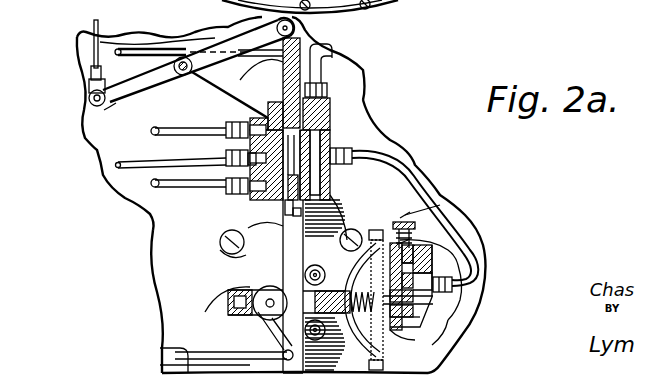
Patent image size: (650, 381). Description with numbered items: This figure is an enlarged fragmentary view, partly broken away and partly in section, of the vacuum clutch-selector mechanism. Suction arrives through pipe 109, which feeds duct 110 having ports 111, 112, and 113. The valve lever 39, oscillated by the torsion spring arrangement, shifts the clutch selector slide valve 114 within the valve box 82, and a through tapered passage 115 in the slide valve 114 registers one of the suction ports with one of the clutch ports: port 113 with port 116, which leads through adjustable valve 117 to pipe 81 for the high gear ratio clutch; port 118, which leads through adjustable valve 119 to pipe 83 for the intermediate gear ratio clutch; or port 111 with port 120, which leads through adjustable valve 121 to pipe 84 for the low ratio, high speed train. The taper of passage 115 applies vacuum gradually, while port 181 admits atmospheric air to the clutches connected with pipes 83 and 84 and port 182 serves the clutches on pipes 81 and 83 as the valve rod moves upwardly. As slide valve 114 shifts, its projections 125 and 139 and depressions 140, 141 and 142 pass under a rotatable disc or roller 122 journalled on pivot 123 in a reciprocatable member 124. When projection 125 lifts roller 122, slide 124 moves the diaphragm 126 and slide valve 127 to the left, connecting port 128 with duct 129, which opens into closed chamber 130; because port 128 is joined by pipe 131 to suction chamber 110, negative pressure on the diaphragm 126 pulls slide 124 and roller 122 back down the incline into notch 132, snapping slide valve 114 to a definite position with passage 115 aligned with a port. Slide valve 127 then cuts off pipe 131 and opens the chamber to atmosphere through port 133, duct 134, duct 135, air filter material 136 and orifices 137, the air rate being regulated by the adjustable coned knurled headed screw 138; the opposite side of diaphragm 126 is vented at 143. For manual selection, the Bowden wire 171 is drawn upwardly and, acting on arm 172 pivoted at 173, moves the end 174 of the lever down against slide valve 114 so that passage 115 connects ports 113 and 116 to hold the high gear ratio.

The valve lever 39 is at (165, 351).
The pipe 81 is at (182, 197).
The valve box 82 is at (350, 121).
The pipe 83 is at (144, 160).
The pipe 84 is at (172, 131).
The pipe 109 is at (330, 64).
The duct 110 is at (343, 89).
The port 111 is at (345, 130).
The port 112 is at (368, 142).
The port 113 is at (335, 186).
The clutch selector slide valve 114 is at (230, 218).
The through tapered passage 115 is at (283, 100).
The port 116 is at (312, 194).
The adjustable valve 117 is at (272, 206).
The port 118 is at (336, 166).
The adjustable valve 119 is at (238, 183).
The port 120 is at (268, 115).
The adjustable valve 121 is at (238, 152).
The rotatable disc 122 is at (232, 287).
The pivot 123 is at (262, 323).
The reciprocatable member 124 is at (232, 304).
The projection 125 is at (254, 283).
The diaphragm 126 is at (440, 364).
The slide valve 127 is at (432, 323).
The port 128 is at (465, 302).
The duct 129 is at (450, 338).
The closed chamber 130 is at (392, 340).
The pipe 131 is at (410, 212).
The notch 132 is at (312, 268).
The port 133 is at (398, 236).
The duct 134 is at (455, 283).
The duct 135 is at (408, 240).
The air filter material 136 is at (495, 250).
The orifices 137 is at (440, 273).
The adjustable coned knurled headed screw 138 is at (440, 205).
The projection 139 is at (220, 246).
The depression 140 is at (292, 286).
The depression 141 is at (303, 268).
The depression 142 is at (303, 330).
The vent 143 is at (352, 342).
The Bowden wire 171 is at (93, 26).
The arm 172 is at (88, 140).
The pivot 173 is at (183, 60).
The end of lever 174 is at (294, 30).
The port 181 is at (237, 84).
The port 182 is at (295, 282).